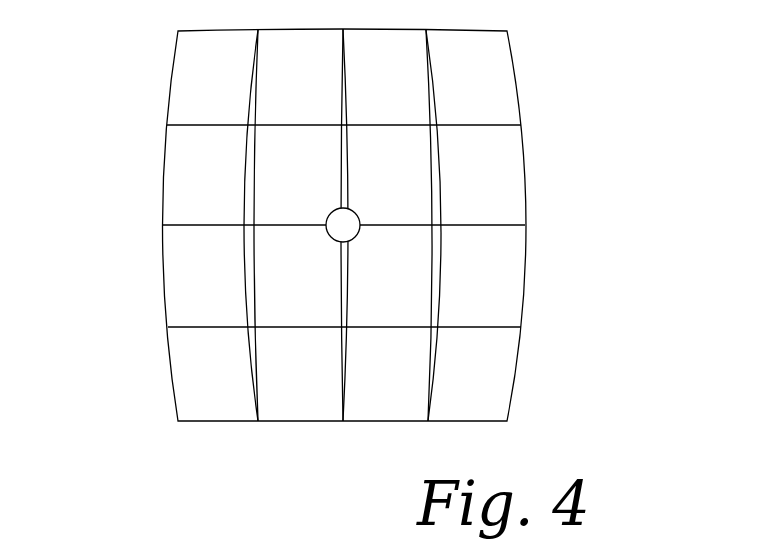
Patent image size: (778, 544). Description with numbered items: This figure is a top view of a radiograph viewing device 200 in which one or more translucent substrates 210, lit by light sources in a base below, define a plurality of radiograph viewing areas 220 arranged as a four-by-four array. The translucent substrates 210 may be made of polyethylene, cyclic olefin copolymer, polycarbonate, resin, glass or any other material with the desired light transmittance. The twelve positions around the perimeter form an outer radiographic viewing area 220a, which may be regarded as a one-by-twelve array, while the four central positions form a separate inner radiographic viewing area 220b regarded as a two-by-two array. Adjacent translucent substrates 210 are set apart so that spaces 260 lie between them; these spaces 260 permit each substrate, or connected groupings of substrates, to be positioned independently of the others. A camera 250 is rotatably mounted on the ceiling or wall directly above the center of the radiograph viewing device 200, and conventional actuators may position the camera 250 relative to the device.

The radiograph viewing device 200 is at (373, 267).
The translucent substrate 210 is at (510, 402).
The radiograph viewing area 220 is at (508, 347).
The outer radiographic viewing area 220a is at (345, 228).
The inner radiographic viewing area 220b is at (345, 228).
The camera 250 is at (338, 223).
The spaces 260 is at (437, 152).